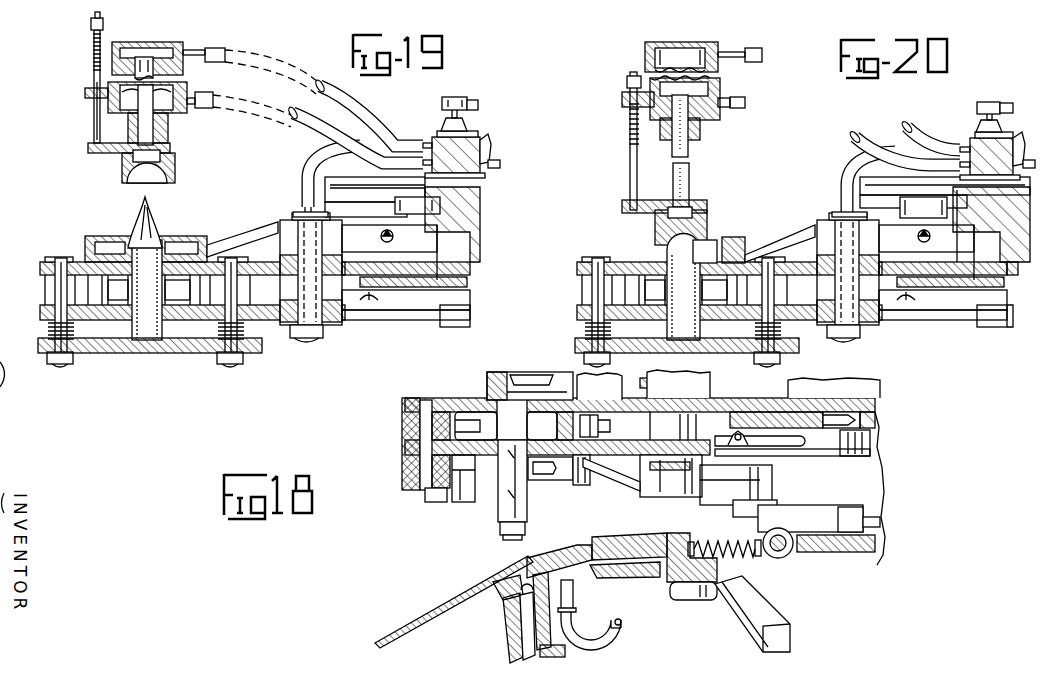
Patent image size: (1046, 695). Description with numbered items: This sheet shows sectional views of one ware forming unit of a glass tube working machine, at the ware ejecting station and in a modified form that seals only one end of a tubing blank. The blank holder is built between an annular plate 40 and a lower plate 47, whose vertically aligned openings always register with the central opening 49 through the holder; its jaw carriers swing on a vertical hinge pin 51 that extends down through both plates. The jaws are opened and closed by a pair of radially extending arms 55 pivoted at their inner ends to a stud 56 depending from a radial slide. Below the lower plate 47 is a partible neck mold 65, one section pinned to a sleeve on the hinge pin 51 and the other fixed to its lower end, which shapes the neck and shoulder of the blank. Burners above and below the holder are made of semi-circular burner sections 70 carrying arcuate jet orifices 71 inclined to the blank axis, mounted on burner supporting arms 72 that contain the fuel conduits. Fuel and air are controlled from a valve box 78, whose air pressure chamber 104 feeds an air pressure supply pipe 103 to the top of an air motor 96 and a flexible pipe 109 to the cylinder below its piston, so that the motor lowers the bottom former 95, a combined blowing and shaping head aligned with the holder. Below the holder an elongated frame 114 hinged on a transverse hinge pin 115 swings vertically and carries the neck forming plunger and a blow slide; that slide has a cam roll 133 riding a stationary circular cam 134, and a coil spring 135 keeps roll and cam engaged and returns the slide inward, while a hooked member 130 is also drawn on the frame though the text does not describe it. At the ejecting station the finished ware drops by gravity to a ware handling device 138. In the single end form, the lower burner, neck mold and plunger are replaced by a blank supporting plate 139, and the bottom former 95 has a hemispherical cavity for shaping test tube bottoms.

In FIG. 18, the annular plate 40 is at (405, 403).
In FIG. 18, the plate 47 is at (402, 450).
In FIG. 18, the central opening 49 is at (496, 398).
In FIG. 18, the vertical hinge pin 51 is at (425, 418).
In FIG. 18, the arms 55 is at (784, 456).
In FIG. 18, the stud 56 is at (878, 420).
In FIG. 18, the partible neck mold 65 is at (426, 492).
In FIG. 19, the burner sections 70 is at (200, 240).
In FIG. 18, the burner sections 70 is at (584, 486).
In FIG. 19, the arcuate jet orifices 71 is at (124, 242).
In FIG. 18, the arcuate jet orifices 71 is at (515, 382).
In FIG. 19, the burner supporting arms 72 is at (251, 236).
In FIG. 18, the burner supporting arms 72 is at (632, 478).
In FIG. 19, the valve box 78 is at (430, 128).
In FIG. 19, the bottom former 95 is at (175, 168).
In FIG. 20, the bottom former 95 is at (706, 224).
In FIG. 19, the air motor 96 is at (190, 82).
In FIG. 20, the air motor 96 is at (720, 81).
In FIG. 19, the air pressure supply pipe 103 is at (221, 49).
In FIG. 19, the air pressure chamber 104 is at (472, 137).
In FIG. 20, the air pressure chamber 104 is at (968, 140).
In FIG. 19, the flexible pipe 109 is at (203, 108).
In FIG. 18, the elongated frame 114 is at (490, 613).
In FIG. 18, the transverse hinge pin 115 is at (784, 556).
In FIG. 18, the hook 130 is at (623, 638).
In FIG. 18, the cam roll 133 is at (693, 600).
In FIG. 18, the stationary circular cam 134 is at (729, 618).
In FIG. 18, the coil spring 135 is at (709, 547).
In FIG. 18, the ware handling device 138 is at (438, 618).
In FIG. 19, the blank supporting plate 139 is at (148, 355).
In FIG. 20, the blank supporting plate 139 is at (737, 355).